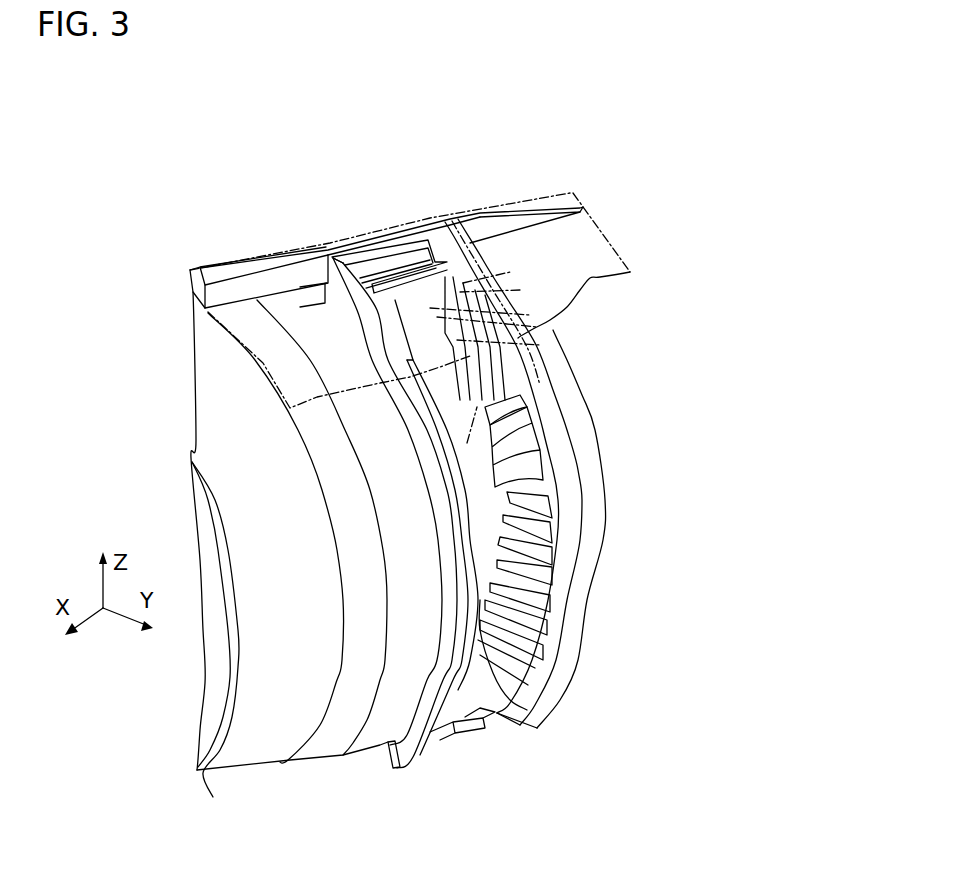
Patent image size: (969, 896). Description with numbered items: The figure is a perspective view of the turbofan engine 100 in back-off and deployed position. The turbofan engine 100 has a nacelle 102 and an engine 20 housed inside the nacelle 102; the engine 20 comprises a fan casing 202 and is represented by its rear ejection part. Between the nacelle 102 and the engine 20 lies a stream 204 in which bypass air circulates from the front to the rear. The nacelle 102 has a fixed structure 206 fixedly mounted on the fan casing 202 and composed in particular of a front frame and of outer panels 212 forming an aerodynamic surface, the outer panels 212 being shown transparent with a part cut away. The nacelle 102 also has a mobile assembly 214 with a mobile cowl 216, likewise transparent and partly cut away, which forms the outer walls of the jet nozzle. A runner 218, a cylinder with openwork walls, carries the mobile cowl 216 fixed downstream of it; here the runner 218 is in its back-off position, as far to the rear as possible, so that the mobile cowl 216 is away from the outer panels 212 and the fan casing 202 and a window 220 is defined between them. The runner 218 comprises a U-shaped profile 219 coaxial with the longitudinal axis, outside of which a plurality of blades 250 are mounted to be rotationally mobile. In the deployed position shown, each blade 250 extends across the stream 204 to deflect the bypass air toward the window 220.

The turbofan engine 100 is at (626, 154).
The nacelle 102 is at (515, 160).
The engine 20 is at (602, 500).
The fan casing 202 is at (197, 772).
The stream 204 is at (545, 367).
The fixed structure 206 is at (145, 366).
The outer panels 212 is at (262, 260).
The mobile assembly 214 is at (610, 778).
The mobile cowl 216 is at (592, 241).
The runner 218 is at (596, 717).
The U-shaped profile 219 is at (518, 718).
The window 220 is at (473, 460).
The blades 250 is at (538, 607).